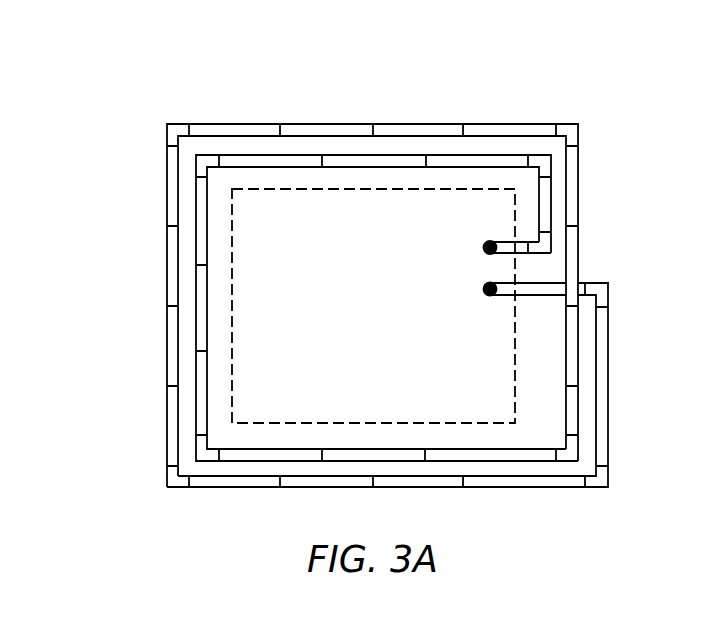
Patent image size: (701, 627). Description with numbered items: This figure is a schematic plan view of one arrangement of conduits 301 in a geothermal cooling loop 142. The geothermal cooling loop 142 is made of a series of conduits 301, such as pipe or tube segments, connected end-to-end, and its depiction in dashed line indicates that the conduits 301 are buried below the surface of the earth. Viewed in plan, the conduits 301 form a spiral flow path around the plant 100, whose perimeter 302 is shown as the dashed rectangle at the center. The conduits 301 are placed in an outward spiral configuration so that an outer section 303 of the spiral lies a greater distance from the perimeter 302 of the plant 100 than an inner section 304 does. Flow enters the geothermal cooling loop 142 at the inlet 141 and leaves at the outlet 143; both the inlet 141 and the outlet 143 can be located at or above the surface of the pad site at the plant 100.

The geothermal cooling loop 142 is at (150, 96).
The conduits 301 is at (167, 256).
The inner section 304 is at (367, 168).
The outer section 303 is at (330, 488).
The perimeter 302 is at (232, 290).
The plant 100 is at (386, 326).
The inlet 141 is at (483, 247).
The outlet 143 is at (483, 289).